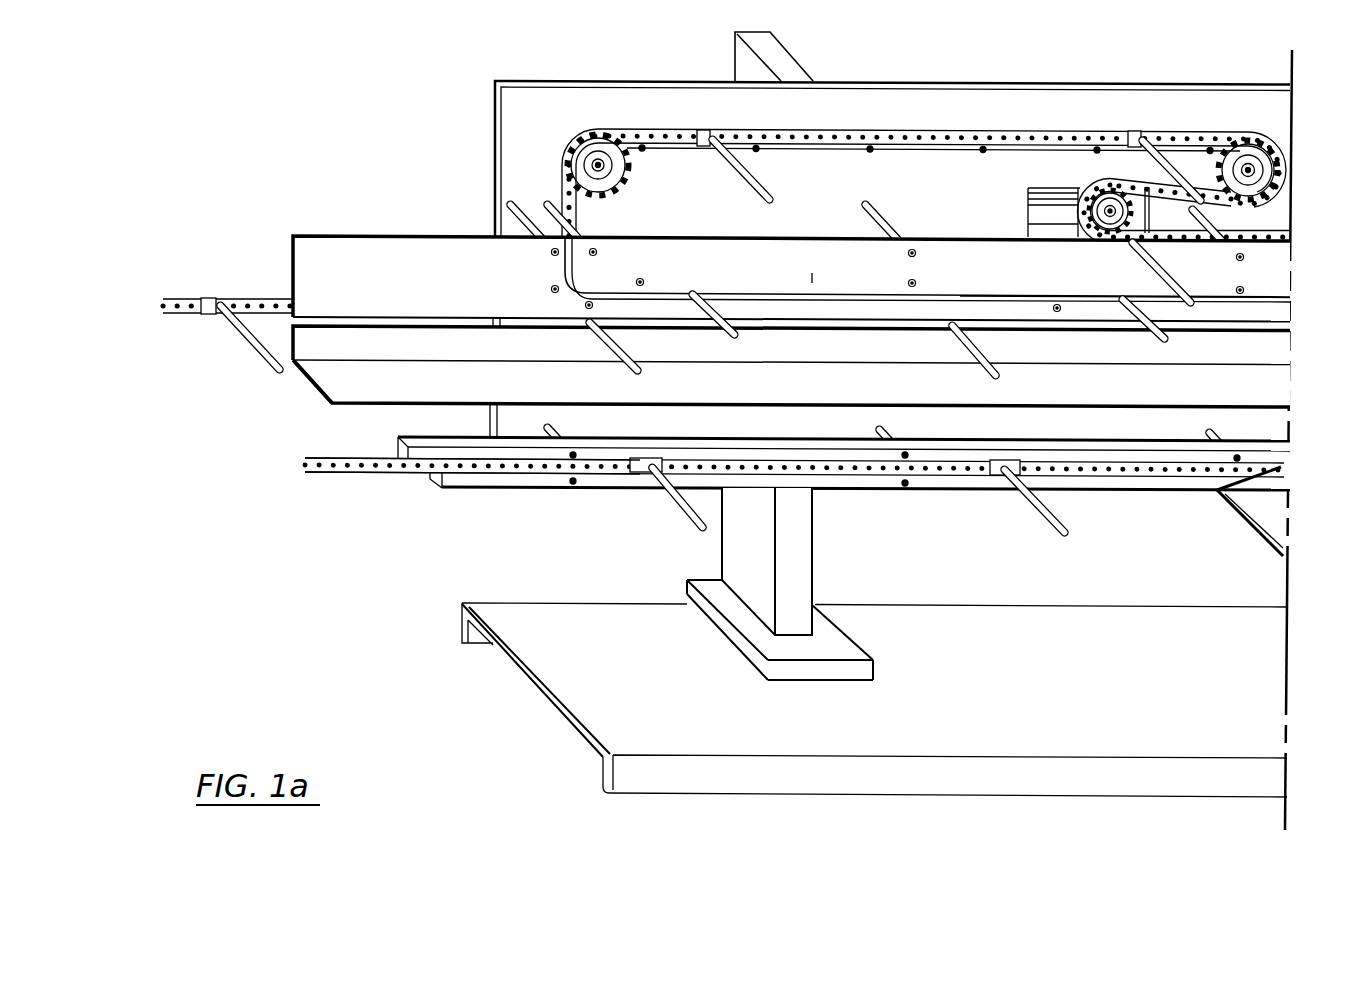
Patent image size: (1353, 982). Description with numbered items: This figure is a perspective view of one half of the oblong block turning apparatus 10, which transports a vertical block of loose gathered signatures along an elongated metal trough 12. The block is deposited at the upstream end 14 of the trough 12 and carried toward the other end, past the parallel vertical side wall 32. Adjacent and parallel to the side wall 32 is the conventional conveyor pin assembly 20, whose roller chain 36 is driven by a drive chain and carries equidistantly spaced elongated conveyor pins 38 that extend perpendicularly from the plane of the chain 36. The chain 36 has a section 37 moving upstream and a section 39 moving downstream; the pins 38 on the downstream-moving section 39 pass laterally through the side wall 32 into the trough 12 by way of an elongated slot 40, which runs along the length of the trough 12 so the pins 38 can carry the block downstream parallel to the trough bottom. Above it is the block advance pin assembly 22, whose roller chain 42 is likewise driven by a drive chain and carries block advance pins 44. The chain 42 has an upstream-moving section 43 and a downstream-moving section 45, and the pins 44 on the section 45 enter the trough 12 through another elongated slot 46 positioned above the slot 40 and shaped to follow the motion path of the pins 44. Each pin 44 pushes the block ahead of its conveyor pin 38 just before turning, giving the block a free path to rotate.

The oblong block turning apparatus 10 is at (296, 152).
The elongated trough 12 is at (298, 386).
The upstream end 14 is at (317, 398).
The pin assembly 20 is at (265, 287).
The pin assembly 22 is at (1105, 126).
The side wall 32 is at (363, 280).
The roller chain 36 is at (472, 466).
The section 37 is at (378, 473).
The conveyor pins 38 is at (740, 327).
The section 39 is at (695, 517).
The elongated slot 40 is at (398, 322).
The roller chain 42 is at (563, 168).
The upstream-moving section 43 is at (952, 130).
The block advance pins 44 is at (765, 185).
The downstream-moving section 45 is at (848, 278).
The elongated slot 46 is at (1015, 295).